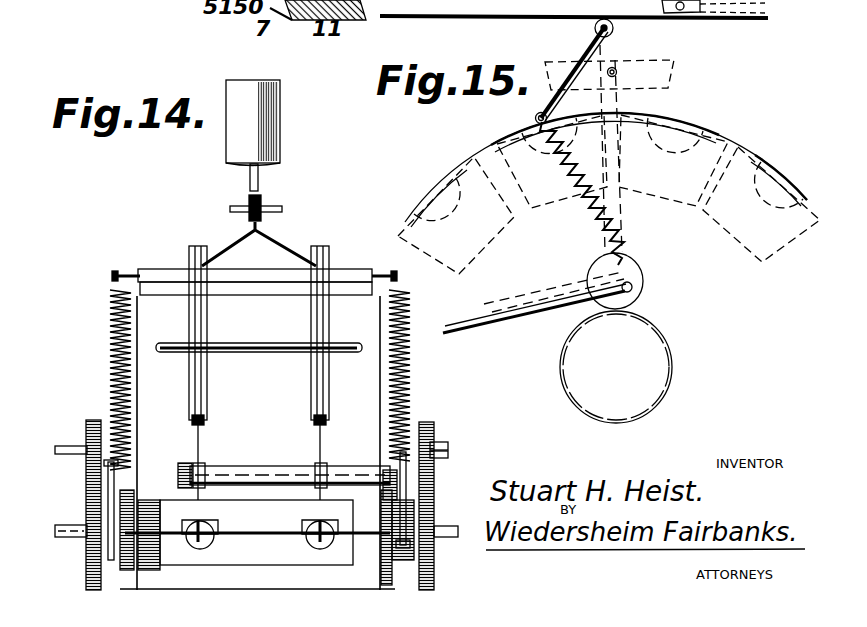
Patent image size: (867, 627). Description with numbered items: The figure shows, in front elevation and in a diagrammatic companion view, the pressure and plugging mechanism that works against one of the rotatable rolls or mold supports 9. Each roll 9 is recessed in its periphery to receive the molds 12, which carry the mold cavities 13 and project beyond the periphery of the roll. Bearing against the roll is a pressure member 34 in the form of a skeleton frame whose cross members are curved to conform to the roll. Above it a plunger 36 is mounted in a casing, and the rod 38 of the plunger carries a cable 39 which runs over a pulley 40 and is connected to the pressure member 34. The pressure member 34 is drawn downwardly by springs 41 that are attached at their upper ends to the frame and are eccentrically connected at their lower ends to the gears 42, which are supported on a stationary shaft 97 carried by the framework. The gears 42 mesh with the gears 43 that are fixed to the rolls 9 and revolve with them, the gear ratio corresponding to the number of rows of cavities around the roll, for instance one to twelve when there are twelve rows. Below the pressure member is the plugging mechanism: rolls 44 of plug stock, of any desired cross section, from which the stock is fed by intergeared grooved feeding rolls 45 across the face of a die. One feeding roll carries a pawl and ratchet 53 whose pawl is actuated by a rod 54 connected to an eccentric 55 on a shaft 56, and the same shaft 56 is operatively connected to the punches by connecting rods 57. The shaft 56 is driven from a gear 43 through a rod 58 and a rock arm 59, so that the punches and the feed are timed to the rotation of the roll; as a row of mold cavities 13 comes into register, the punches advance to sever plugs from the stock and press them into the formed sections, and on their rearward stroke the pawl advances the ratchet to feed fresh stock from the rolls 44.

In FIG. 15, the rotatable roll or mold support 9 is at (727, 144).
In FIG. 15, the mold 12 is at (742, 228).
In FIG. 15, the mold cavity 13 is at (790, 170).
In FIG. 14, the pressure member 34 is at (352, 270).
In FIG. 15, the pressure member 34 is at (632, 66).
In FIG. 14, the plunger 36 is at (260, 112).
In FIG. 14, the plunger rod 38 is at (258, 172).
In FIG. 14, the cable 39 is at (272, 240).
In FIG. 15, the cable 39 is at (582, 48).
In FIG. 14, the pulley 40 is at (262, 199).
In FIG. 15, the pulley 40 is at (595, 29).
In FIG. 14, the spring 41 is at (112, 338).
In FIG. 15, the spring 41 is at (580, 203).
In FIG. 14, the gear 42 is at (86, 430).
In FIG. 15, the gear 42 is at (644, 298).
In FIG. 14, the gear 43 is at (88, 560).
In FIG. 15, the gear 43 is at (652, 360).
In FIG. 14, the roll of stock 44 is at (312, 321).
In FIG. 14, the grooved feeding roll 45 is at (288, 456).
In FIG. 14, the pawl and ratchet 53 is at (448, 446).
In FIG. 14, the rod 54 is at (398, 487).
In FIG. 14, the eccentric 55 is at (380, 544).
In FIG. 14, the shaft 56 is at (275, 520).
In FIG. 14, the connecting rod 57 is at (252, 560).
In FIG. 14, the rod 58 is at (108, 496).
In FIG. 15, the rod 58 is at (538, 320).
In FIG. 14, the rock arm 59 is at (138, 560).
In FIG. 14, the stationary shaft 97 is at (76, 451).